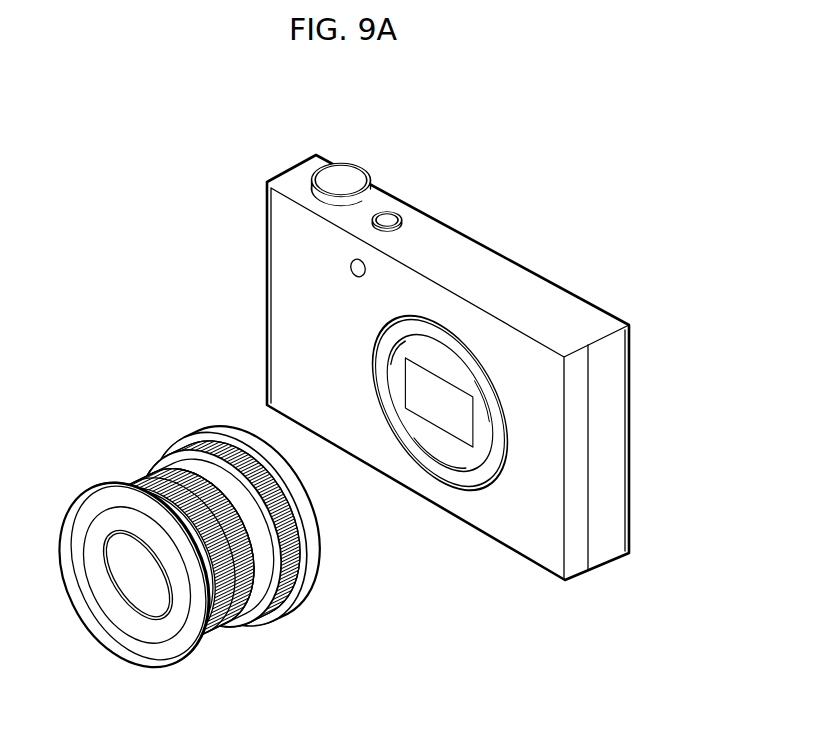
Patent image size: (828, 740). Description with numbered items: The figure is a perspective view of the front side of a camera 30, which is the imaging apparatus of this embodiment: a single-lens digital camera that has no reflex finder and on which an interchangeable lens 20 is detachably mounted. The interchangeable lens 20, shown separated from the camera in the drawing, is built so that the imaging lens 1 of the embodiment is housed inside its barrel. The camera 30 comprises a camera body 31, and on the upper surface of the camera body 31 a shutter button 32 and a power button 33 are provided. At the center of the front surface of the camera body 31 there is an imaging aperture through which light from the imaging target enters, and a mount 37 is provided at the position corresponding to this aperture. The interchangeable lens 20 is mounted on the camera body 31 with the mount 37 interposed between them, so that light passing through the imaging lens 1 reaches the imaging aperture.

The imaging lens 1 is at (142, 597).
The interchangeable lens 20 is at (121, 487).
The camera 30 is at (572, 221).
The camera body 31 is at (618, 412).
The shutter button 32 is at (349, 174).
The power button 33 is at (390, 216).
The mount 37 is at (461, 478).